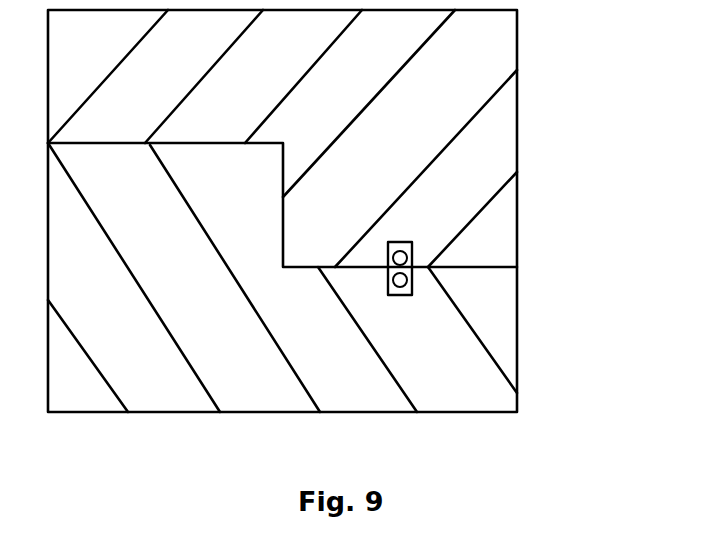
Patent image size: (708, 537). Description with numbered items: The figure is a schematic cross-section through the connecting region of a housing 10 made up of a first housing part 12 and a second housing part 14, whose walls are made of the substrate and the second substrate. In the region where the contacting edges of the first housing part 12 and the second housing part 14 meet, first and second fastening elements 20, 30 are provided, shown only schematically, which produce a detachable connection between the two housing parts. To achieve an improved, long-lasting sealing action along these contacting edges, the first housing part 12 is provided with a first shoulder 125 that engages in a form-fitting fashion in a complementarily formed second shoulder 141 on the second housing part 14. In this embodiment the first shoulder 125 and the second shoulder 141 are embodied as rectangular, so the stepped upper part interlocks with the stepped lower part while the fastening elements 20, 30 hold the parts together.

The housing 10 is at (522, 220).
The first housing part 12 is at (508, 34).
The first shoulder 125 is at (284, 216).
The second housing part 14 is at (502, 325).
The second shoulder 141 is at (281, 246).
The first fastening element 20 is at (503, 215).
The second fastening element 30 is at (421, 248).